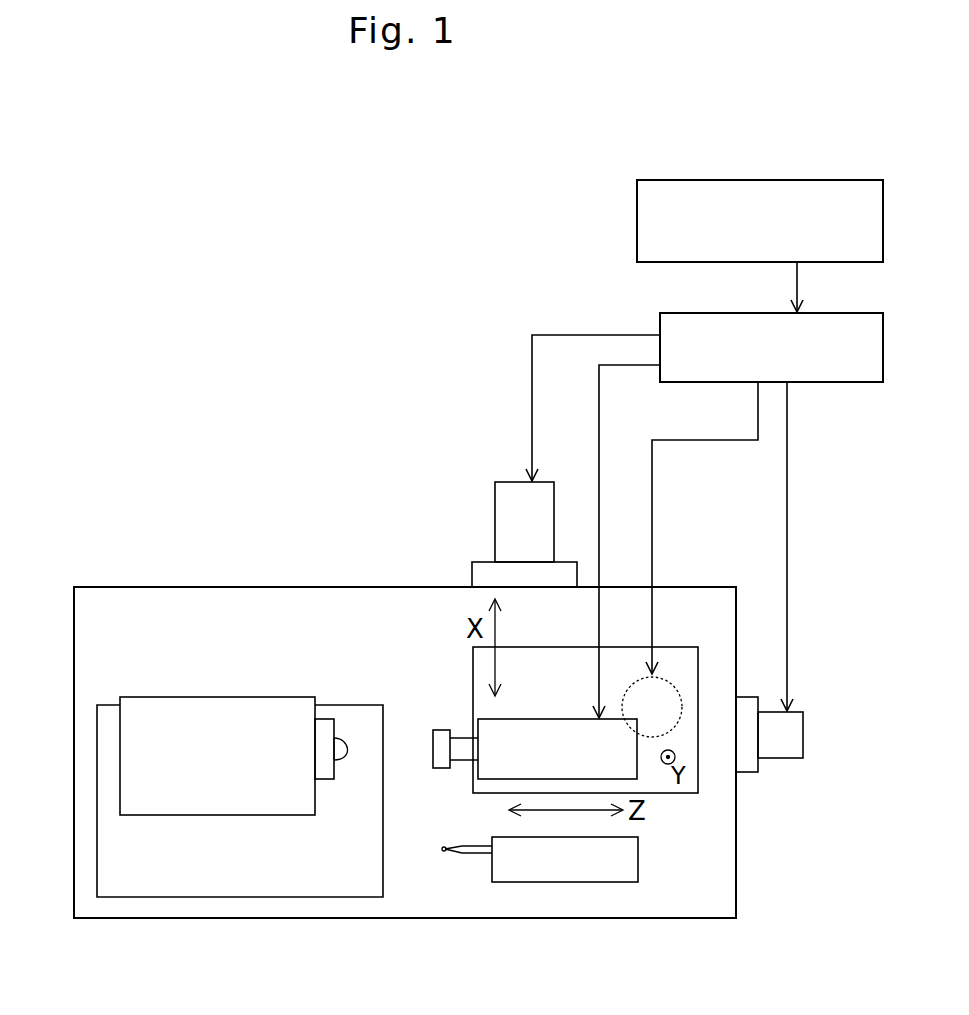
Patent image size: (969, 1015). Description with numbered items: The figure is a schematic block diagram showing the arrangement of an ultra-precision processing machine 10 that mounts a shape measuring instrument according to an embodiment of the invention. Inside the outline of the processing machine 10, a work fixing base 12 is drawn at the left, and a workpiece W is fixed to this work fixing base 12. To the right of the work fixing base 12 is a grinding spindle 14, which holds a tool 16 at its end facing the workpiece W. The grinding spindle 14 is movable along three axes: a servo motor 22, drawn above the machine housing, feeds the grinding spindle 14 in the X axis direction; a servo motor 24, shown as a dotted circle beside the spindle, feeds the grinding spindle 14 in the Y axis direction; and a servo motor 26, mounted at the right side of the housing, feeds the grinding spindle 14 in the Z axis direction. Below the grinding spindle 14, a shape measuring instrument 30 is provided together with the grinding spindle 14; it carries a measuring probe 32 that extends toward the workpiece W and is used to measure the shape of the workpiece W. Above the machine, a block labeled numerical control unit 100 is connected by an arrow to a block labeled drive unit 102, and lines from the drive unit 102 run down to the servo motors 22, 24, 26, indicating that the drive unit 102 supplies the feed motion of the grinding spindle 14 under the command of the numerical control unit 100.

The ultra-precision processing machine 10 is at (126, 587).
The work fixing base 12 is at (214, 697).
The workpiece W is at (348, 738).
The grinding spindle 14 is at (540, 719).
The tool 16 is at (440, 730).
The servo motor 22 is at (495, 520).
The servo motor 24 is at (670, 678).
The servo motor 26 is at (781, 758).
The shape measuring instrument 30 is at (566, 882).
The measuring probe 32 is at (452, 855).
The numerical control unit 100 is at (637, 186).
The drive unit 102 is at (660, 330).